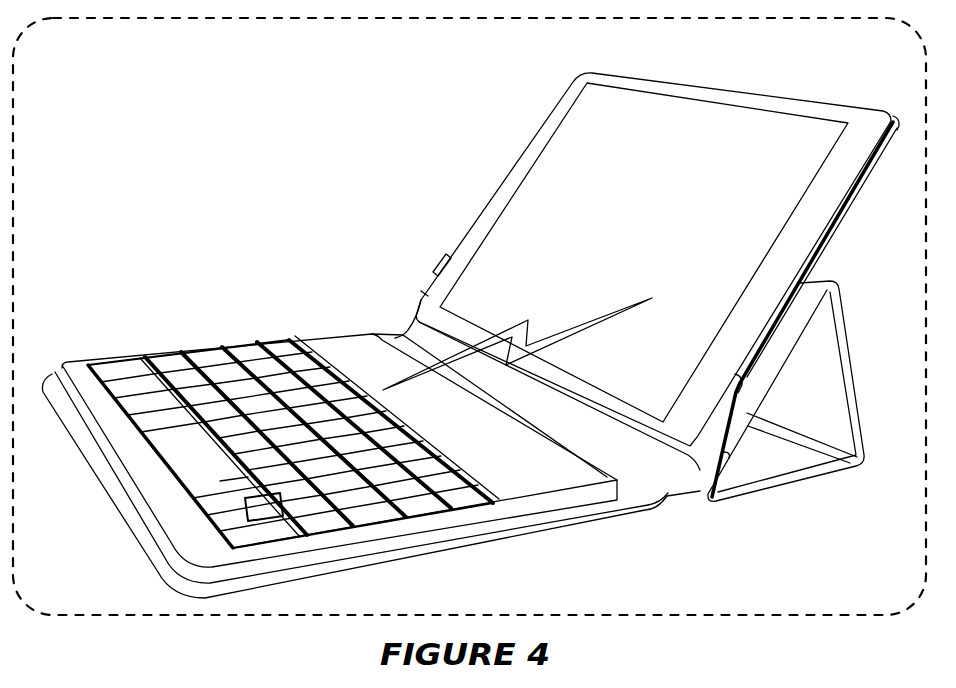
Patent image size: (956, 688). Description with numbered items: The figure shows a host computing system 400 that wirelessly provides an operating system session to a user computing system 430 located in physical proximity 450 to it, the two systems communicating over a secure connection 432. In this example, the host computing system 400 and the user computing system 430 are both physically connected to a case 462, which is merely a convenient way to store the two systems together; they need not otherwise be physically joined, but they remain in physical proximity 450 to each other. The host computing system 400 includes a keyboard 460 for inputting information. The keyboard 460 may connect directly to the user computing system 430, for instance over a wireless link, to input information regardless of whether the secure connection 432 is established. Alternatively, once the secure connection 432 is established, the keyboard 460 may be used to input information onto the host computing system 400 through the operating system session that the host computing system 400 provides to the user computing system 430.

The host computing system 400 is at (370, 332).
The user computing system 430 is at (482, 207).
The secure connection 432 is at (618, 313).
The physical proximity 450 is at (470, 57).
The keyboard 460 is at (175, 362).
The case 462 is at (797, 481).